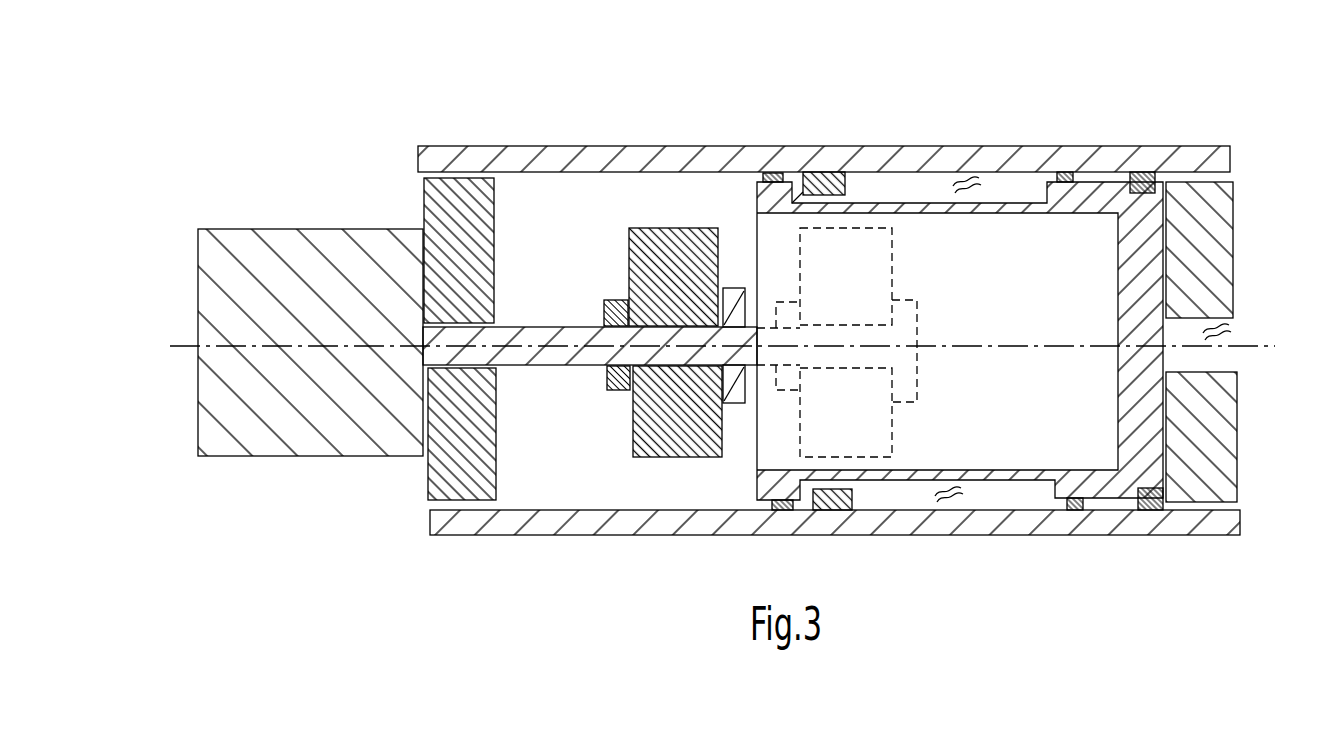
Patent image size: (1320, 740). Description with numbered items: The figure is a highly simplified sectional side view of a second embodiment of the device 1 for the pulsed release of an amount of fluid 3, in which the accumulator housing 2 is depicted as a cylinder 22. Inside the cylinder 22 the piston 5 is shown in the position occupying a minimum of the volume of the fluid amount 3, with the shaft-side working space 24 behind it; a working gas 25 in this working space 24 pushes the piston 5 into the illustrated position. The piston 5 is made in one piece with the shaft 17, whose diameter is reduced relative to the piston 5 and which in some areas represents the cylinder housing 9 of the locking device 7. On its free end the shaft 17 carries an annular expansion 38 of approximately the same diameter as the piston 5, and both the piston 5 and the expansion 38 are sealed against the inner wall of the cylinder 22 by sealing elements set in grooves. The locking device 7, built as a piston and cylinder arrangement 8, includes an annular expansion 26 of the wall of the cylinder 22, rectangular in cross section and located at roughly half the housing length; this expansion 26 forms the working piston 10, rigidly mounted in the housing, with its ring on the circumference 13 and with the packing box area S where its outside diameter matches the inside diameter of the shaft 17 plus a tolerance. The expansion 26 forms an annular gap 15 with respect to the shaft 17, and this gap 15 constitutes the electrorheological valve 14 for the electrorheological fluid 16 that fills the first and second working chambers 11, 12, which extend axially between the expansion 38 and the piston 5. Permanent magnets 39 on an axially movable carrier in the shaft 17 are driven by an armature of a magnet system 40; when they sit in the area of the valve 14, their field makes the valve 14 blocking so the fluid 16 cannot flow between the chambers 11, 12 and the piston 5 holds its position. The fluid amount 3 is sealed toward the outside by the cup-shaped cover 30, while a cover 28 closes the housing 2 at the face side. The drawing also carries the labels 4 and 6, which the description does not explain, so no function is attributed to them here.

The device 1 is at (910, 106).
The accumulator housing 2 is at (630, 143).
The amount of fluid 3 is at (1226, 321).
The first chamber 4 is at (540, 220).
The piston 5 is at (1143, 236).
The drive unit 6 is at (335, 465).
The locking device 7 is at (909, 232).
The piston and cylinder arrangement 8 is at (851, 130).
The cylinder housing 9 is at (1007, 208).
The working piston 10 is at (852, 186).
The first working chamber 11 is at (803, 178).
The second working chamber 12 is at (1004, 190).
The circumference 13 is at (797, 201).
The electrorheological valve 14 is at (853, 219).
The annular gap 15 is at (838, 178).
The electrorheological fluid 16 is at (963, 178).
The shaft 17 is at (1093, 200).
The cylinder 22 is at (543, 160).
The shaft-side working space 24 is at (573, 466).
The working gas 25 is at (642, 490).
The annular expansion 26 is at (865, 493).
The cover 28 is at (445, 481).
The cover 30 is at (1205, 280).
The annular expansion 38 is at (1040, 200).
The permanent magnets 39 is at (694, 437).
The magnet system 40 is at (267, 462).
The packing box area S is at (768, 196).